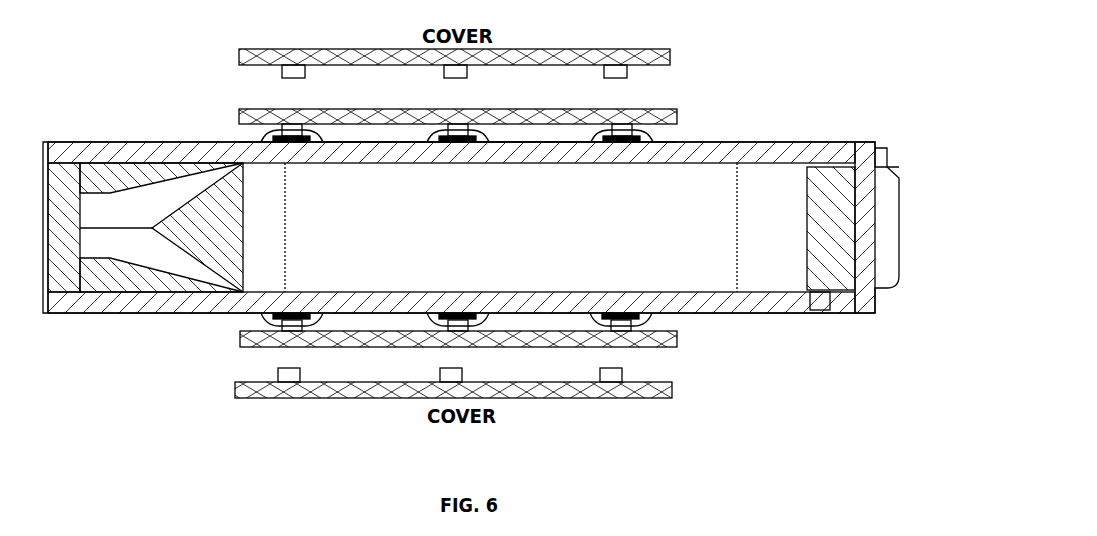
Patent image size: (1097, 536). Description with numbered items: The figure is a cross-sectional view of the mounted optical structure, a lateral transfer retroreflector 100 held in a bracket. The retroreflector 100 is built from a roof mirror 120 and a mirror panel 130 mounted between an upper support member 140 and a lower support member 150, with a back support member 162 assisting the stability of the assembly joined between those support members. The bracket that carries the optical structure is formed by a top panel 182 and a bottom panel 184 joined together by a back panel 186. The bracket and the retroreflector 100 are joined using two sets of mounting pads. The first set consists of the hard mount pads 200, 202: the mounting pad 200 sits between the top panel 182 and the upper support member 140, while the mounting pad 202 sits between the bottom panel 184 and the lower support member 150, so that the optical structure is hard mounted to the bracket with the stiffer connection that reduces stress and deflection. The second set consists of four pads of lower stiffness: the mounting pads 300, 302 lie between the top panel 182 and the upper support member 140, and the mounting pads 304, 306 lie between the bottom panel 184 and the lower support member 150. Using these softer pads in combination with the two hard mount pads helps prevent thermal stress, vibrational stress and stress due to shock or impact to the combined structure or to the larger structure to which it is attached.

The lateral transfer retroreflector 100 is at (138, 133).
The roof mirror 120 is at (165, 265).
The mirror panel 130 is at (827, 230).
The upper support member 140 is at (760, 150).
The lower support member 150 is at (760, 305).
The back support member 162 is at (662, 197).
The top panel 182 is at (673, 112).
The bottom panel 184 is at (676, 344).
The back panel 186 is at (372, 143).
The hard mount pad 200 is at (478, 132).
The hard mount pad 202 is at (475, 316).
The lower-stiffness mounting pad 300 is at (313, 130).
The lower-stiffness mounting pad 302 is at (605, 133).
The lower-stiffness mounting pad 304 is at (280, 317).
The lower-stiffness mounting pad 306 is at (636, 318).